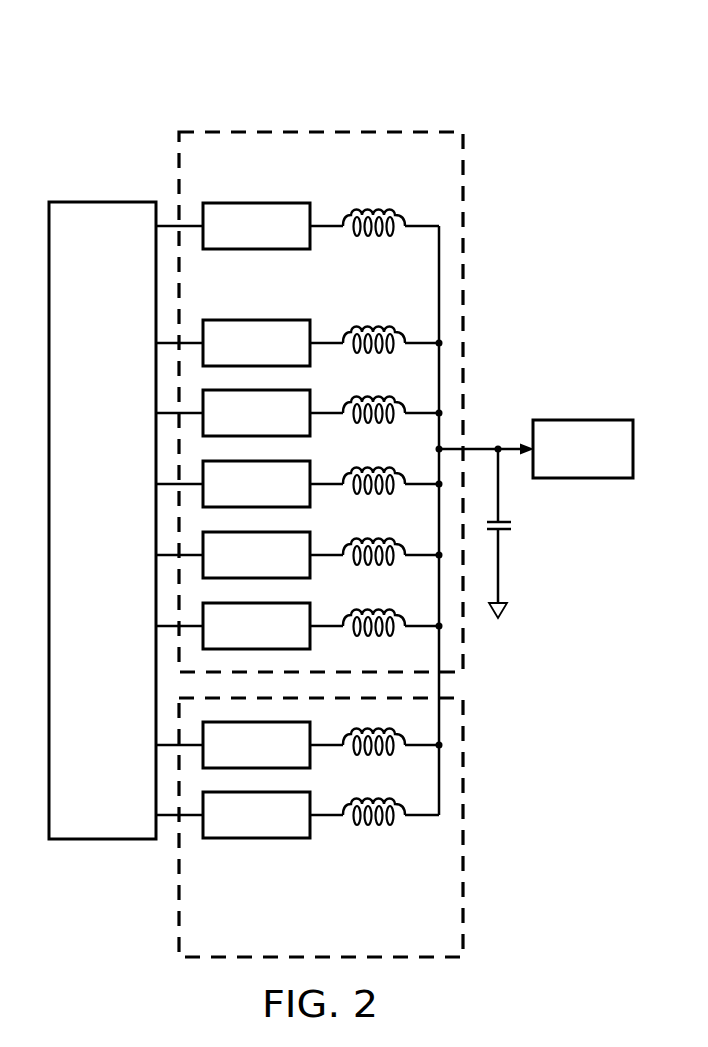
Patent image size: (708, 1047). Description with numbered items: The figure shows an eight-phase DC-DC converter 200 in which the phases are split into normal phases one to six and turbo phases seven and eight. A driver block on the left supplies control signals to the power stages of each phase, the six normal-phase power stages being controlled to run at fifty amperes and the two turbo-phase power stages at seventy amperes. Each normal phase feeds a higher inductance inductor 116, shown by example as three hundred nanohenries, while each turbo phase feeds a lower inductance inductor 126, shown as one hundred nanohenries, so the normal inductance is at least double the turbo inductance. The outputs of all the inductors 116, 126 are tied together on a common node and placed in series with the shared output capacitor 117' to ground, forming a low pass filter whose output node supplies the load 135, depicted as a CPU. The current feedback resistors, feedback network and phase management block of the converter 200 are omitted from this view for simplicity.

The 8-phase DC-DC converter 200 is at (528, 95).
The higher inductance inductor 116 is at (378, 234).
The lower inductance inductor 126 is at (380, 822).
The output capacitor 117' is at (540, 533).
The load 135 is at (583, 420).